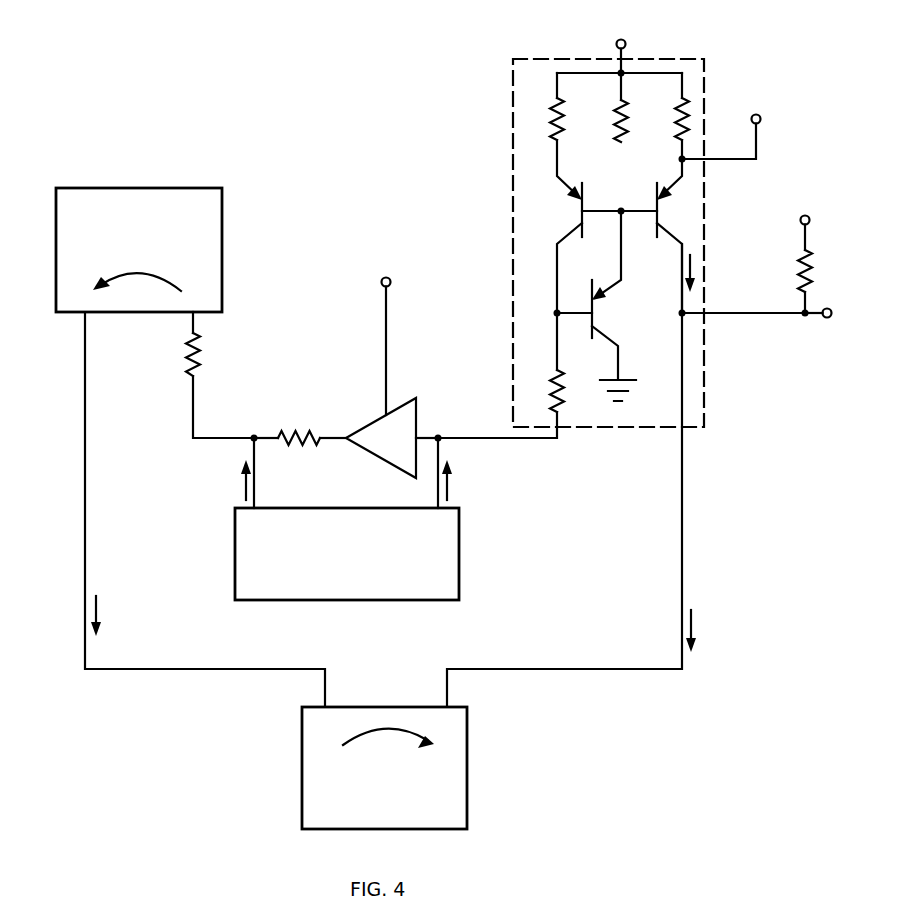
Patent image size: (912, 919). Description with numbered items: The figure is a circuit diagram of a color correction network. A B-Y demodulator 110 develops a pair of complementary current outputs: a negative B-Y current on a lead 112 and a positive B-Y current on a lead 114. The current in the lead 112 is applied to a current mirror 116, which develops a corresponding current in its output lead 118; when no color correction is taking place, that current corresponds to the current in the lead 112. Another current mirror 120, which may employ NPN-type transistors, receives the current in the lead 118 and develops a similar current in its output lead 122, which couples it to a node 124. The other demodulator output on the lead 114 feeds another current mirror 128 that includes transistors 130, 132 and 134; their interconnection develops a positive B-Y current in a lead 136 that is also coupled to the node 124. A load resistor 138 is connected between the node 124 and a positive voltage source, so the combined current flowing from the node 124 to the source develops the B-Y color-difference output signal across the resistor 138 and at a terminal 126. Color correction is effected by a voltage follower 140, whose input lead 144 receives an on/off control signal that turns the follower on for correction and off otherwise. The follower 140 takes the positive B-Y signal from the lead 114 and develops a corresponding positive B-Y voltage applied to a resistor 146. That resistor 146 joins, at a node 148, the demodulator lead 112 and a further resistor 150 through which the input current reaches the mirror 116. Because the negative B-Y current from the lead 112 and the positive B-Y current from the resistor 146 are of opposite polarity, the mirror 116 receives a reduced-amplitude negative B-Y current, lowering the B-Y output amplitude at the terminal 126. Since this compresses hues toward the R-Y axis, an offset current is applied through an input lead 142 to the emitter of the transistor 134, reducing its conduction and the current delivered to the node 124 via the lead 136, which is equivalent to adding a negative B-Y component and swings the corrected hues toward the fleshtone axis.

The B-Y demodulator 110 is at (332, 601).
The lead 112 is at (256, 483).
The lead 114 is at (440, 505).
The current mirror 116 is at (193, 188).
The output lead 118 is at (85, 557).
The current mirror 120 is at (302, 773).
The output lead 122 is at (596, 671).
The node 124 is at (680, 316).
The terminal 126 is at (805, 300).
The current mirror 128 is at (513, 179).
The transistor 130 is at (582, 211).
The transistor 132 is at (600, 313).
The transistor 134 is at (659, 211).
The lead 136 is at (682, 262).
The load resistor 138 is at (802, 258).
The voltage follower 140 is at (416, 415).
The input lead 142 is at (742, 161).
The input lead 144 is at (386, 330).
The resistor 146 is at (300, 432).
The node 148 is at (254, 434).
The resistor 150 is at (201, 353).